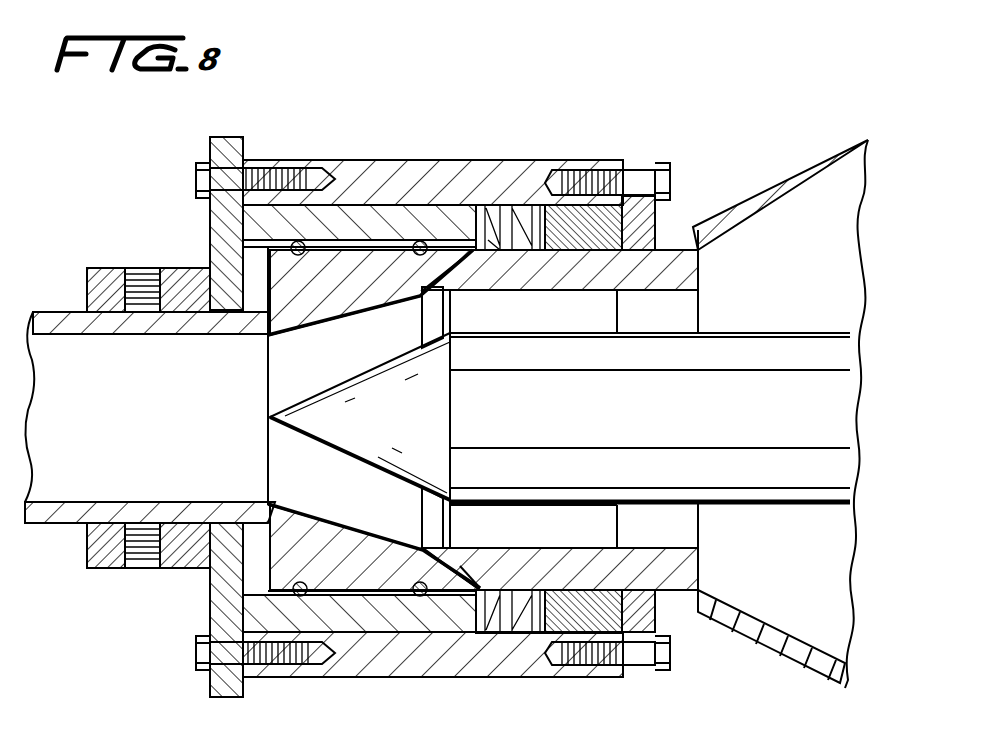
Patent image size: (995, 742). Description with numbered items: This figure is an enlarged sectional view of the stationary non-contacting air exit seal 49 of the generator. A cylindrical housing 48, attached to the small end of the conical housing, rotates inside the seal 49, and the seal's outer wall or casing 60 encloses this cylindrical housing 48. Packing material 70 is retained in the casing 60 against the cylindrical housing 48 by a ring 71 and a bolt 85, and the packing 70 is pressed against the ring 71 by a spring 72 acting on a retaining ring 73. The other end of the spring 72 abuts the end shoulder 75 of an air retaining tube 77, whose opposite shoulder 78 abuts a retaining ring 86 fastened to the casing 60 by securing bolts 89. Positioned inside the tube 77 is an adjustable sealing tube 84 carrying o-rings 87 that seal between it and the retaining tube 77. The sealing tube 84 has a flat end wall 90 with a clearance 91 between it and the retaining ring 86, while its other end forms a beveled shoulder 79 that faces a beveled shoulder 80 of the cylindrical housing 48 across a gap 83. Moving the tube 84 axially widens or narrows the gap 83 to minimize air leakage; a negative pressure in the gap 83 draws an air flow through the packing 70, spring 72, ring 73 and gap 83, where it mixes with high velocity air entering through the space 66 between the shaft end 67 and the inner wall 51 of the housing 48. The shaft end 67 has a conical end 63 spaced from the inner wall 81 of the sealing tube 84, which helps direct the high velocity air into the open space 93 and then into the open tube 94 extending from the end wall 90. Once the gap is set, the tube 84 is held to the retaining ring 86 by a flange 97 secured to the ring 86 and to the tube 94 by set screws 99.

The cylindrical housing 48 is at (650, 395).
The air exit seal 49 is at (414, 150).
The inner wall 51 is at (610, 548).
The outer wall or casing 60 is at (472, 160).
The conical end 63 is at (340, 452).
The space 66 is at (582, 539).
The shaft end 67 is at (505, 506).
The packing material 70 is at (585, 232).
The ring 71 is at (658, 222).
The spring 72 is at (560, 420).
The retaining ring 73 is at (515, 230).
The end shoulder 75 is at (482, 242).
The air retaining tube 77 is at (385, 214).
The opposite shoulder 78 is at (243, 232).
The beveled shoulder 79 is at (447, 534).
The beveled shoulder 80 is at (478, 578).
The inner wall 81 is at (378, 528).
The gap 83 is at (474, 288).
The adjustable sealing tube 84 is at (340, 318).
The bolt 85 is at (672, 176).
The retaining ring 86 is at (210, 233).
The o-rings 87 is at (300, 255).
The securing bolts 89 is at (196, 182).
The flat end wall 90 is at (258, 338).
The clearance 91 is at (266, 289).
The open space 93 is at (306, 374).
The open tube 94 is at (178, 500).
The flange 97 is at (198, 525).
The set screws 99 is at (155, 570).